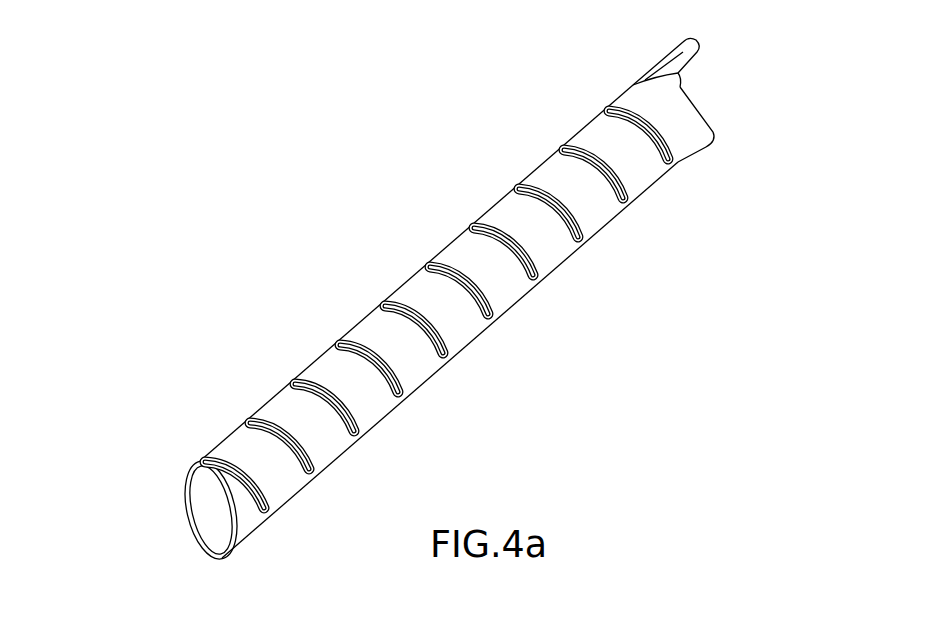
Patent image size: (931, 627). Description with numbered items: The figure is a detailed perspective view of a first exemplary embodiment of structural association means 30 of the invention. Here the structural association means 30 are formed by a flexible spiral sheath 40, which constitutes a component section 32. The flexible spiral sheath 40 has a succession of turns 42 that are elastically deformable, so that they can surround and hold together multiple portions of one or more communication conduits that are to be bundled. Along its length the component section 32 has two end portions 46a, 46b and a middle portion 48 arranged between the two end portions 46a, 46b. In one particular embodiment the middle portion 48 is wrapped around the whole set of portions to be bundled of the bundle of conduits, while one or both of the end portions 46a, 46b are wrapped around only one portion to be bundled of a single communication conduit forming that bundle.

The structural association means 30 is at (440, 302).
The component section 32 is at (440, 302).
The flexible spiral sheath 40 is at (551, 231).
The turns 42 is at (456, 322).
The end portion 46a is at (722, 79).
The end portion 46b is at (220, 493).
The middle portion 48 is at (473, 262).